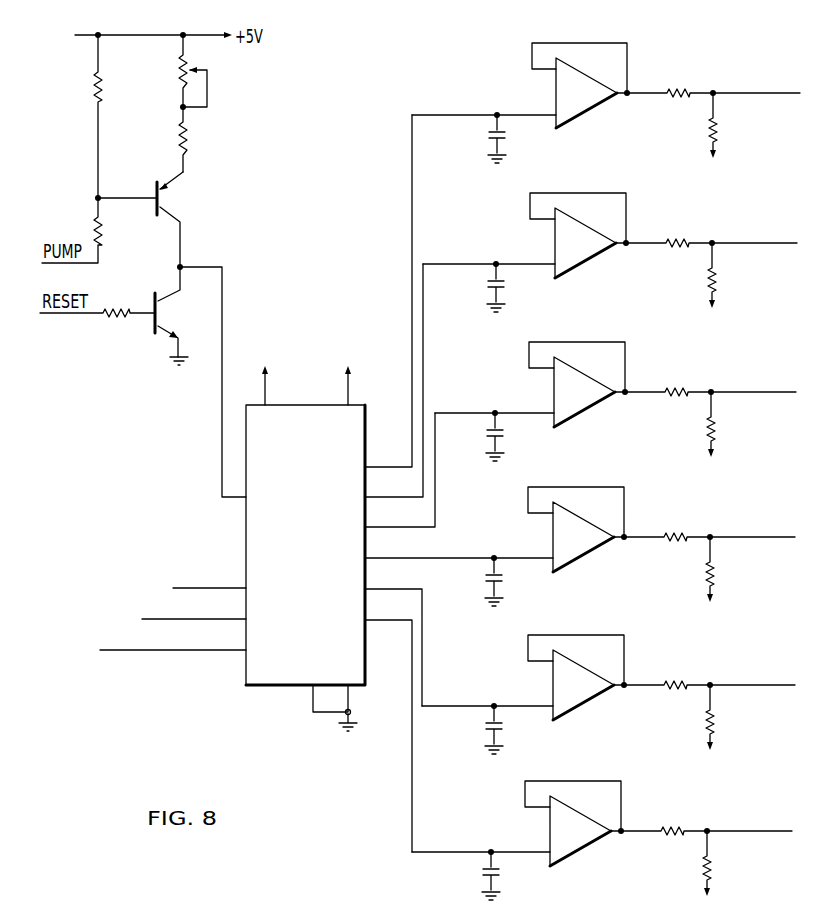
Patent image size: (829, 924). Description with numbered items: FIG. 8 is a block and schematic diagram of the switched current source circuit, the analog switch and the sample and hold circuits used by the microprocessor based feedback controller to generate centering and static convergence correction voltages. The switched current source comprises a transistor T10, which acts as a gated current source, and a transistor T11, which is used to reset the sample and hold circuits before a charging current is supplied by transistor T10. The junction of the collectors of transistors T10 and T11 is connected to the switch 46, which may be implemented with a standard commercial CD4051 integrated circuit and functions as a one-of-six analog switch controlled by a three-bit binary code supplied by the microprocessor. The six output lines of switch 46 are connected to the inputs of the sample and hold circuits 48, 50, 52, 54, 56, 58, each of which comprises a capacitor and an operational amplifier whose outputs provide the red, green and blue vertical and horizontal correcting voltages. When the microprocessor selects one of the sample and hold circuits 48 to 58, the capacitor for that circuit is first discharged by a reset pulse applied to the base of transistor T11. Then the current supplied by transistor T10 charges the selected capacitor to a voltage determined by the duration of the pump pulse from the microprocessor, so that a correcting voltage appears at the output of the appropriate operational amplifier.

The one-of-eight analog switch 46 is at (367, 431).
The sample and hold circuit 48 is at (621, 41).
The sample and hold circuit 50 is at (603, 181).
The sample and hold circuit 52 is at (602, 330).
The sample and hold circuit 54 is at (601, 475).
The sample and hold circuit 56 is at (601, 623).
The sample and hold circuit 58 is at (598, 769).
The transistor T10 is at (152, 219).
The transistor T11 is at (116, 316).